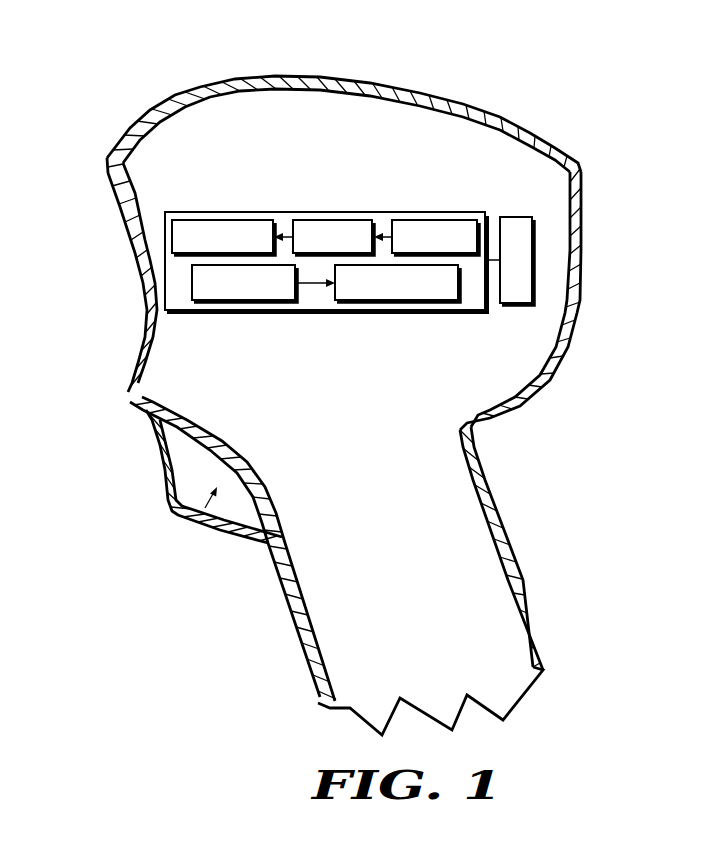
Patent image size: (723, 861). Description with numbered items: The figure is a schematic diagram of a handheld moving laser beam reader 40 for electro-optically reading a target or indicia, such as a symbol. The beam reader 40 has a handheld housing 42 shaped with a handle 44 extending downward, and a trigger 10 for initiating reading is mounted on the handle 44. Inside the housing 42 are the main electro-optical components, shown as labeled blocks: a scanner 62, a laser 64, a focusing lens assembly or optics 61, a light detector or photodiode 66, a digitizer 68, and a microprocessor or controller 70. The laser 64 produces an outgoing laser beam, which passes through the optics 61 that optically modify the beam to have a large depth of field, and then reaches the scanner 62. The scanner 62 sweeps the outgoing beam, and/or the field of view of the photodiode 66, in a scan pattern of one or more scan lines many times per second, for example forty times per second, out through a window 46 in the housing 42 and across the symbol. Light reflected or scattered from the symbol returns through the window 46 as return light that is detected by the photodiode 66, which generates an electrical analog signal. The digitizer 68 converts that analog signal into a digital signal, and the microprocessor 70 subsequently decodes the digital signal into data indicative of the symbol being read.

The trigger 10 is at (196, 545).
The moving laser beam reader 40 is at (649, 170).
The handheld housing 42 is at (583, 272).
The handle 44 is at (508, 542).
The window 46 is at (139, 259).
The optics 61 is at (334, 220).
The scanner 62 is at (222, 220).
The laser 64 is at (436, 220).
The photodiode 66 is at (242, 303).
The digitizer 68 is at (397, 303).
The microprocessor 70 is at (515, 217).